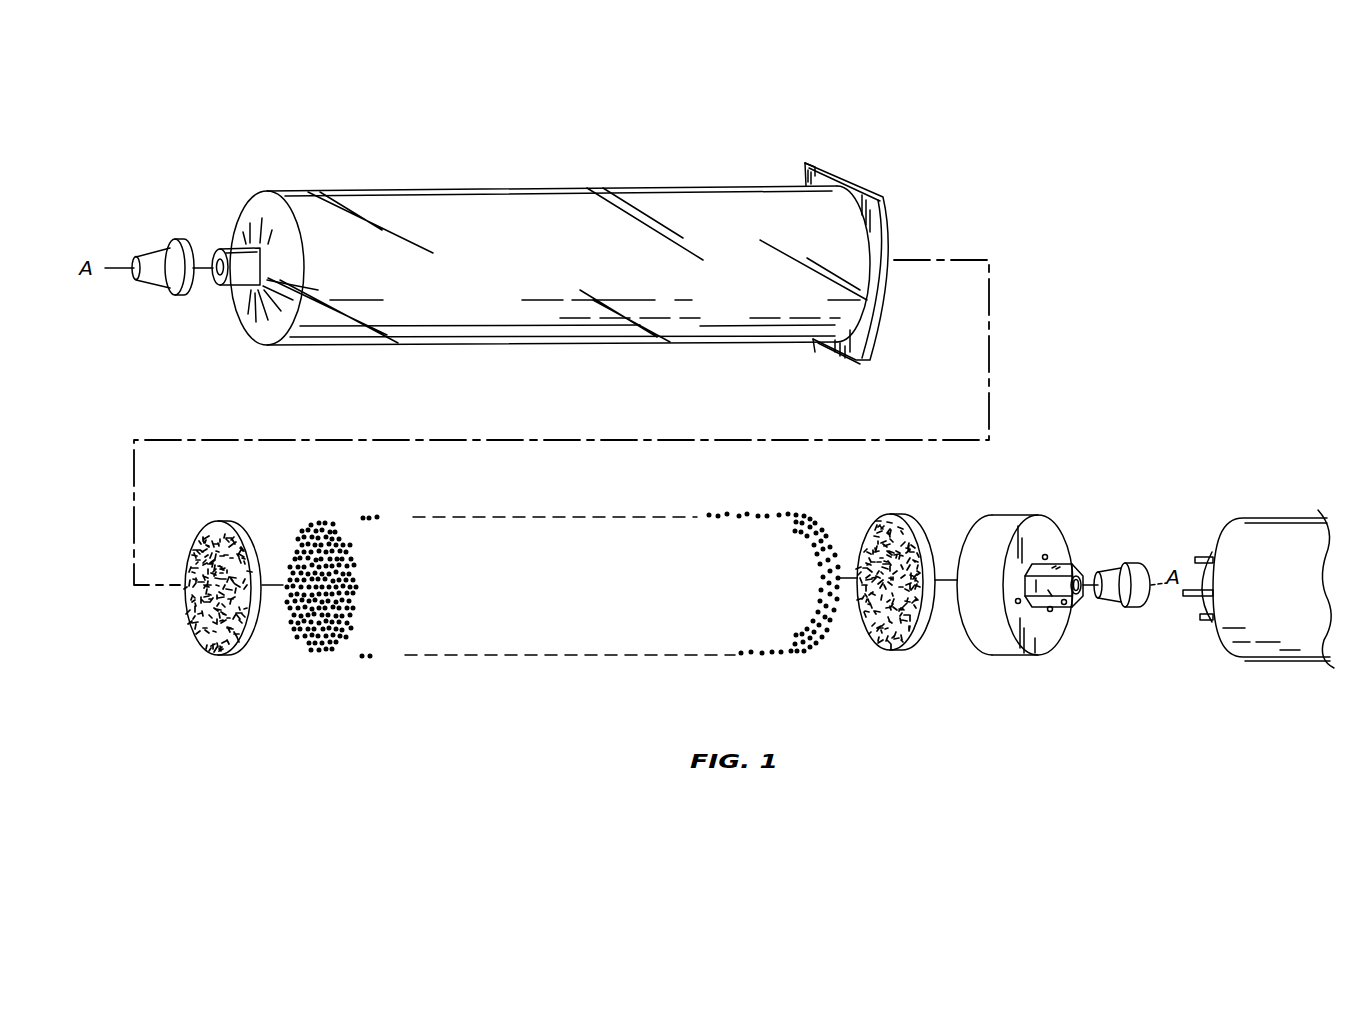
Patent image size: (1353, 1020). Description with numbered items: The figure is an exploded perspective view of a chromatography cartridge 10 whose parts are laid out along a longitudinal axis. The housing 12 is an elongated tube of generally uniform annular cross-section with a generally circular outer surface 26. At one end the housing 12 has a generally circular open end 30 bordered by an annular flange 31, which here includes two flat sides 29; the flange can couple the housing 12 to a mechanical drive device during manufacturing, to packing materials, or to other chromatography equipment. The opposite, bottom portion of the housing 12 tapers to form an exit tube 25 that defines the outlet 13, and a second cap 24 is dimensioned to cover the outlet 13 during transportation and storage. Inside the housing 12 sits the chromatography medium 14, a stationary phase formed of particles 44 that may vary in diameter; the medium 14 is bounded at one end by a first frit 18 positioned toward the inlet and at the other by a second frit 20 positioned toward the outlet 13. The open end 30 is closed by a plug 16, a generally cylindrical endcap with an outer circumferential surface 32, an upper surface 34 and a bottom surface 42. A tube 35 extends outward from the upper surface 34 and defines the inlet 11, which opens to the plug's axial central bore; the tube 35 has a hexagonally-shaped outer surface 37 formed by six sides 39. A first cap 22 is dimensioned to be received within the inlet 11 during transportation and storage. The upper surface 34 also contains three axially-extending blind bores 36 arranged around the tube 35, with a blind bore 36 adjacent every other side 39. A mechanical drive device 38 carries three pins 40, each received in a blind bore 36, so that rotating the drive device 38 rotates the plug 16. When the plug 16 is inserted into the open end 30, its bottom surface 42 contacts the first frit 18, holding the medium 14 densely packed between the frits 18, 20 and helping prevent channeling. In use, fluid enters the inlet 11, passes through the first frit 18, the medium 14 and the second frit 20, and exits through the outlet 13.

The chromatography cartridge 10 is at (822, 130).
The housing 12 is at (420, 207).
The outlet 13 is at (215, 267).
The second cap 24 is at (157, 250).
The exit tube 25 is at (240, 274).
The outer surface 26 is at (577, 187).
The flat sides 29 is at (840, 187).
The open end 30 is at (907, 225).
The annular flange 31 is at (874, 315).
The second frit 20 is at (217, 657).
The particles 44 is at (337, 655).
The chromatography medium 14 is at (457, 640).
The first frit 18 is at (872, 637).
The bottom surface 42 is at (957, 623).
The outer circumferential surface 32 is at (1012, 515).
The upper surface 34 is at (1040, 528).
The blind bores 36 is at (1075, 558).
The tube 35 is at (1048, 556).
The inlet 11 is at (1081, 583).
The first cap 22 is at (1131, 563).
The sides 39 is at (1066, 604).
The hexagonally-shaped outer surface 37 is at (1051, 610).
The plug 16 is at (1035, 596).
The mechanical drive device 38 is at (1273, 533).
The pins 40 is at (1208, 592).